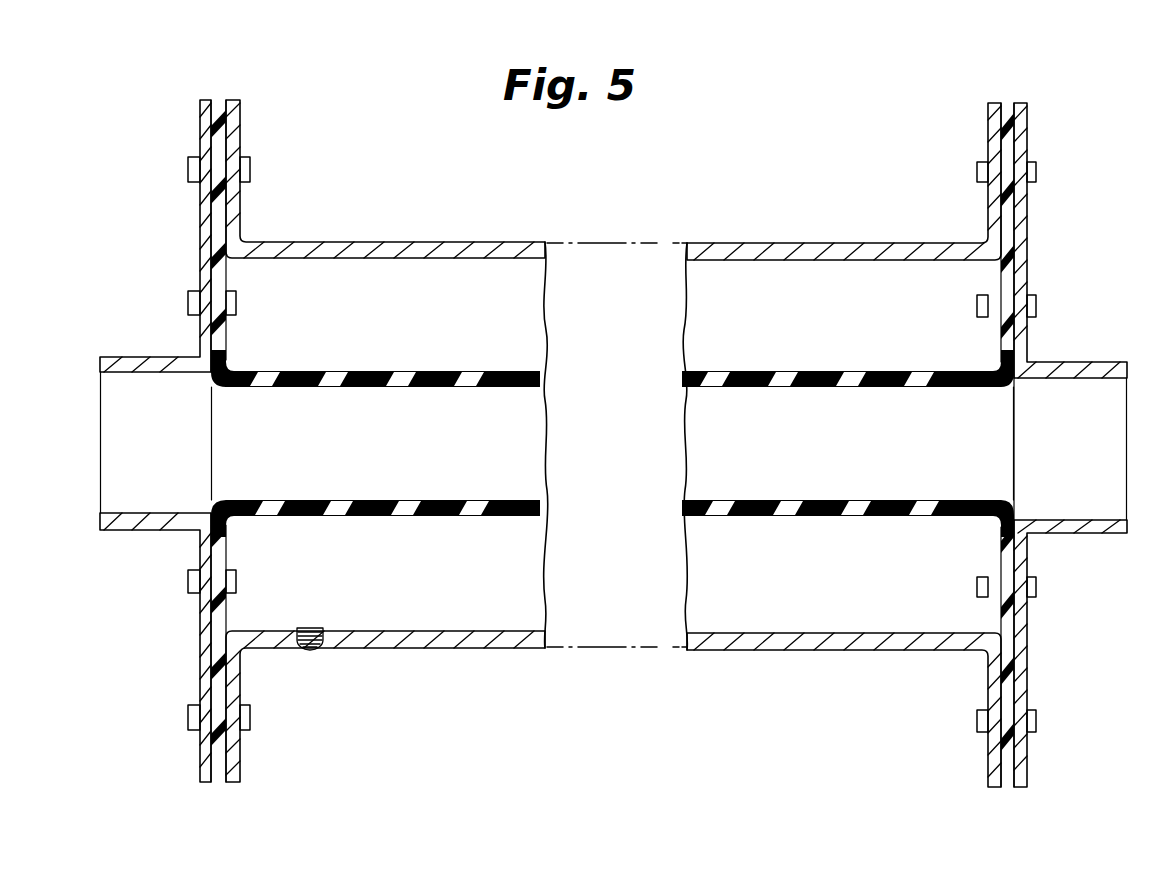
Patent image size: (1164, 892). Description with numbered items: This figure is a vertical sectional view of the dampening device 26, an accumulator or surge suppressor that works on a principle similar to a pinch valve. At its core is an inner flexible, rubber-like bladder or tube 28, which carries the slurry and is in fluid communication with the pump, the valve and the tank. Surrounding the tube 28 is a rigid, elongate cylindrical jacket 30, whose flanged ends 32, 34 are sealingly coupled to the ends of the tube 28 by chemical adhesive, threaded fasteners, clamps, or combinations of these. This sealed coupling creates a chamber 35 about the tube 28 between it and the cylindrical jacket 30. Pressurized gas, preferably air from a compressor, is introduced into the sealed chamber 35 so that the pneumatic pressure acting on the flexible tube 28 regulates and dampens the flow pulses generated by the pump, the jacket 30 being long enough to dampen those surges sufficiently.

The dampening device 26 is at (253, 93).
The tube 28 is at (377, 370).
The cylindrical jacket 30 is at (413, 241).
The flanged end 32 is at (200, 134).
The flanged end 34 is at (1028, 123).
The chamber 35 is at (832, 329).